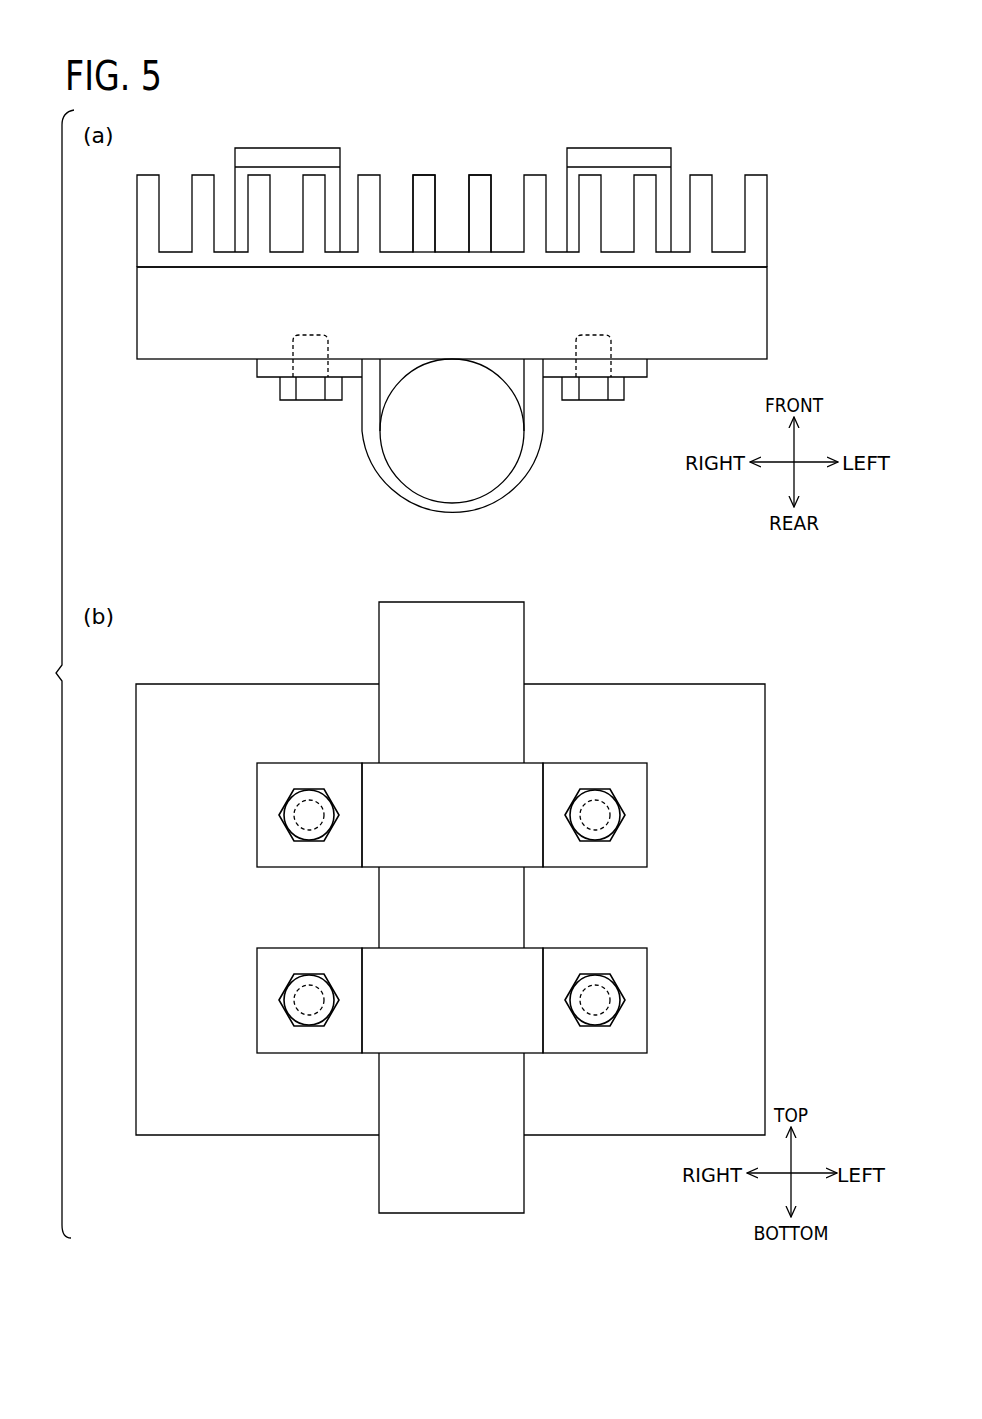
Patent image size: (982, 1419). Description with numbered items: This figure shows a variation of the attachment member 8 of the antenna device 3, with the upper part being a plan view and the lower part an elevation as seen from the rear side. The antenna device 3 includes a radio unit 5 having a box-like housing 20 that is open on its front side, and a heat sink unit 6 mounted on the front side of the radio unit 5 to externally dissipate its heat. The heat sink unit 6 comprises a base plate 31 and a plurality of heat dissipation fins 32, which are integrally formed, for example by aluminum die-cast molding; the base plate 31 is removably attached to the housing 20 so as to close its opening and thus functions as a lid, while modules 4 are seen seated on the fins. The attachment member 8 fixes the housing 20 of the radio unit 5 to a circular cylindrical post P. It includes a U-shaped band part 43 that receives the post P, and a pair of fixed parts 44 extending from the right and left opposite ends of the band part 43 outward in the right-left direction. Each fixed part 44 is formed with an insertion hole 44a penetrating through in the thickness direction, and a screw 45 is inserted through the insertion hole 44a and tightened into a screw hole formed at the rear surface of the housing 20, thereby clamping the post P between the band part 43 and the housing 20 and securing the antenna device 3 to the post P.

The antenna device 3 is at (743, 128).
The semiconductor module 4 is at (289, 148).
The radio unit 5 is at (136, 297).
The heat sink unit 6 is at (136, 207).
The attachment member 8 is at (388, 498).
The housing 20 is at (145, 335).
The base plate 31 is at (397, 258).
The heat dissipation fins 32 is at (480, 188).
The band part 43 is at (518, 477).
The fixed part 44 is at (270, 368).
The insertion hole 44a is at (318, 367).
The screw 45 is at (310, 390).
The post P is at (453, 480).